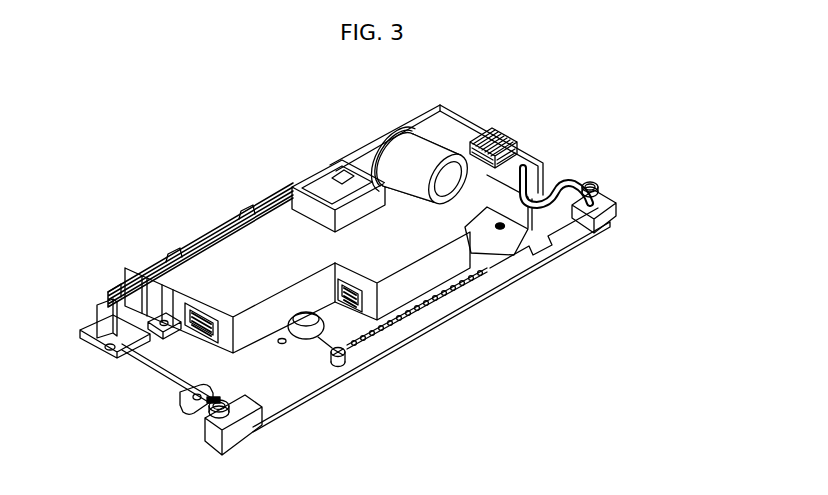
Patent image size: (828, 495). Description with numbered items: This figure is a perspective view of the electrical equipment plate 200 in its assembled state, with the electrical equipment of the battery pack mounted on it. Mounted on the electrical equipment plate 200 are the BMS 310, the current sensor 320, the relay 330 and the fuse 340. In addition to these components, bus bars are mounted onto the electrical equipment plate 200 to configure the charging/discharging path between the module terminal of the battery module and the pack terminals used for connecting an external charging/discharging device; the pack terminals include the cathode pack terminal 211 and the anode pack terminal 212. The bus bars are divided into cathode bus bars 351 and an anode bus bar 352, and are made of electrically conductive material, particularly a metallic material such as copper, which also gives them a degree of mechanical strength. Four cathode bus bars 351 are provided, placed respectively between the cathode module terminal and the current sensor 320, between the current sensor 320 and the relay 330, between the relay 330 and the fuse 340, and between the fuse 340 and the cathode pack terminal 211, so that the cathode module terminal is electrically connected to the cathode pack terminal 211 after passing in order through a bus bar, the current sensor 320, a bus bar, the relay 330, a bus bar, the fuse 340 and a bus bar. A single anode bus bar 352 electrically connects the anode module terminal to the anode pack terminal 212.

The electrical equipment plate 200 is at (518, 280).
The cathode pack terminal 211 is at (600, 197).
The anode pack terminal 212 is at (210, 443).
The BMS 310 is at (235, 253).
The current sensor 320 is at (320, 193).
The relay 330 is at (418, 153).
The fuse 340 is at (497, 142).
The cathode bus bar 351 is at (453, 127).
The anode bus bar 352 is at (187, 405).